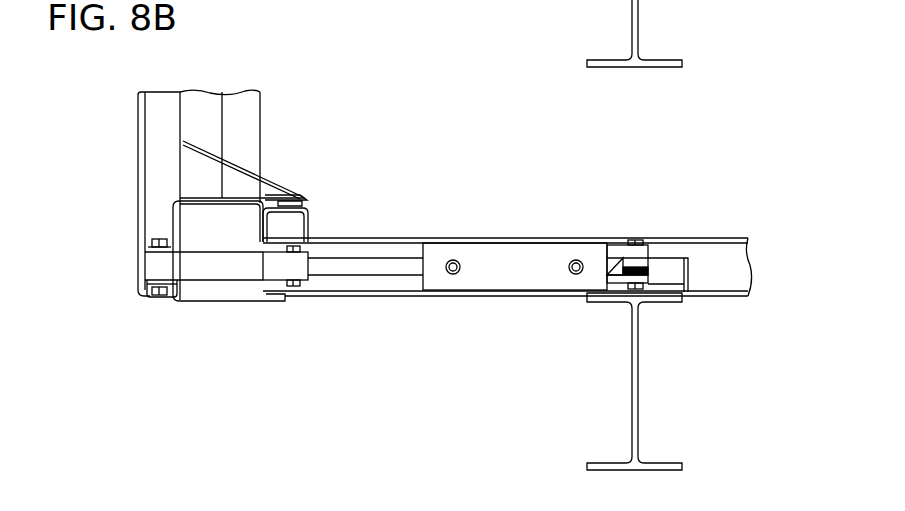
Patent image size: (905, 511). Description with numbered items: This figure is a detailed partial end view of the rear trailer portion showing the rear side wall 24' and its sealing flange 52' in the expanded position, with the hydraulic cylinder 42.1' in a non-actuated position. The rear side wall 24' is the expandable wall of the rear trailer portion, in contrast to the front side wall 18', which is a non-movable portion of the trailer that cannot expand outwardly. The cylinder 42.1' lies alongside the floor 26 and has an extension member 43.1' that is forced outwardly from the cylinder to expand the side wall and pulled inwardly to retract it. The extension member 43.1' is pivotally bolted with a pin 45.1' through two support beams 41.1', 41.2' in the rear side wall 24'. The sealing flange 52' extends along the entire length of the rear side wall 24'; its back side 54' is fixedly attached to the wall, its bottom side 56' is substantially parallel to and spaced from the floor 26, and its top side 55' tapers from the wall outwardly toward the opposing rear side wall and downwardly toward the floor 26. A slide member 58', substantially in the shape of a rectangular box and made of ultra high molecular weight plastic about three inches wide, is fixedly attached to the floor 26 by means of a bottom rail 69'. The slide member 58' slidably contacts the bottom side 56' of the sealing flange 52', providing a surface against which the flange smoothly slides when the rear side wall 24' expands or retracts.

The front side wall 18' is at (256, 116).
The rear side wall 24' is at (110, 184).
The floor 26 is at (540, 238).
The support beam 41.1' is at (99, 255).
The support beam 41.2' is at (105, 311).
The cylinder 42.1' is at (515, 313).
The extension member 43.1' is at (345, 314).
The pin 45.1' is at (146, 344).
The sealing flange 52' is at (273, 133).
The back side 54' is at (171, 196).
The top side 55' is at (291, 151).
The bottom side 56' is at (339, 171).
The slide member 58' is at (356, 188).
The bottom rail 69' is at (358, 222).